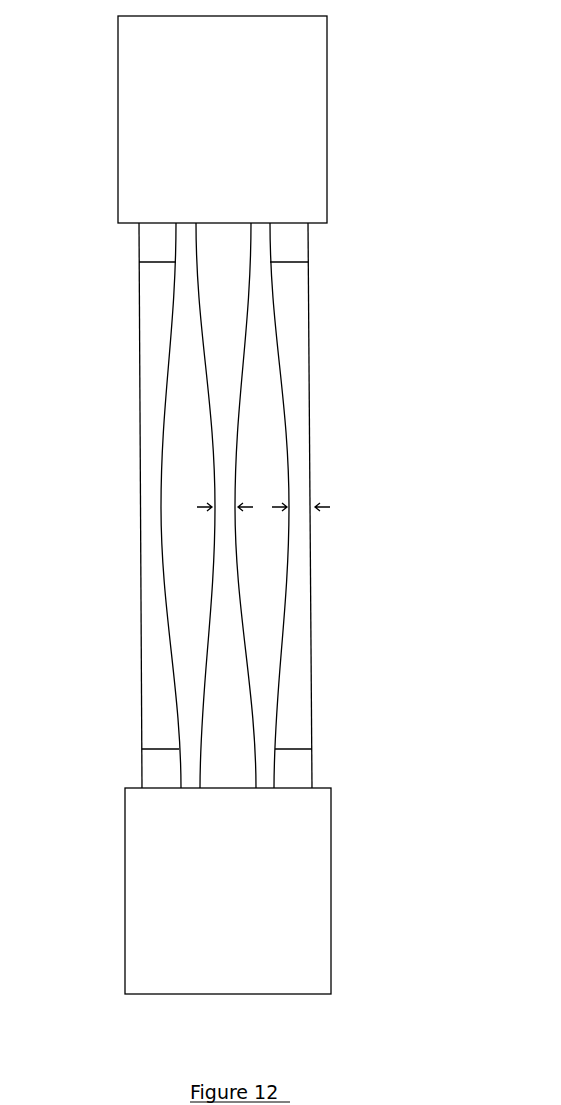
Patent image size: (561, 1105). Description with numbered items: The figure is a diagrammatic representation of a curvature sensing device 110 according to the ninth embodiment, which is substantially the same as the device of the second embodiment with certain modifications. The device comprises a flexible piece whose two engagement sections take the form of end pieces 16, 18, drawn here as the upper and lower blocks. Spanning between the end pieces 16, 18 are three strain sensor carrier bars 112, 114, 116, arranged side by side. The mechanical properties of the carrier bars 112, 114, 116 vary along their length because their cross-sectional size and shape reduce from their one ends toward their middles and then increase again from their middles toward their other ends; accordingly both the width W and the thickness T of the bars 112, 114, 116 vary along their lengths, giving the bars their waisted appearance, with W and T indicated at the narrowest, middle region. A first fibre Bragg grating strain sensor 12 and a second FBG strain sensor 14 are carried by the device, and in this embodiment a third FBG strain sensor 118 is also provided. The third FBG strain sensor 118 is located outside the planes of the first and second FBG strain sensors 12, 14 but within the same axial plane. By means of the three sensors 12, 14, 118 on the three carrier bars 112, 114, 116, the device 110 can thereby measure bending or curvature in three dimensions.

The curvature sensing device 110 is at (272, 505).
The end piece 18 is at (299, 102).
The end piece 16 is at (310, 907).
The strain sensor carrier bar 112 is at (108, 505).
The strain sensor carrier bar 114 is at (128, 551).
The strain sensor carrier bar 116 is at (366, 505).
The first fibre Bragg grating strain sensor 12 is at (138, 508).
The second fibre Bragg grating strain sensor 14 is at (229, 503).
The third fibre Bragg grating strain sensor 118 is at (312, 508).
The width W is at (253, 507).
The thickness T is at (330, 507).